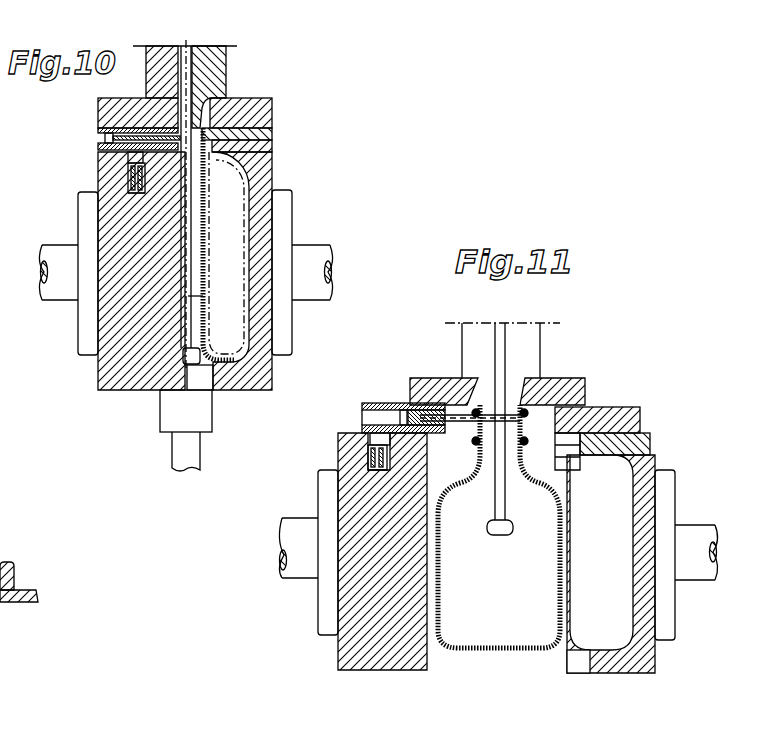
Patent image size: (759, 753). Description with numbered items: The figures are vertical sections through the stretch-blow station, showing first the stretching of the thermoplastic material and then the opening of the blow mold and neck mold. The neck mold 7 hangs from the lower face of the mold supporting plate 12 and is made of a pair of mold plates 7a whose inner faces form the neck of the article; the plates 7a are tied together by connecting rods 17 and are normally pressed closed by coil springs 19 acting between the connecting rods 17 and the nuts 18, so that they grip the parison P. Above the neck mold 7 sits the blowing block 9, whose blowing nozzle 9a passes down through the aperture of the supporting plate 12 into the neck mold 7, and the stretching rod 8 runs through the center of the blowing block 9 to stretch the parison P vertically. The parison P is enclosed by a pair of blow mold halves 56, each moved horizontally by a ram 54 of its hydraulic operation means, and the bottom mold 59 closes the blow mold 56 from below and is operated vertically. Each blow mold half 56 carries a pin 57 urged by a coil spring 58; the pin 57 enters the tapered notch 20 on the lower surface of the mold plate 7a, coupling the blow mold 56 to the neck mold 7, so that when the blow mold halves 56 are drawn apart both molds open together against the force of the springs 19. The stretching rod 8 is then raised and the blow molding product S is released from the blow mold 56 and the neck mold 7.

In FIG. 10, the neck mold 7 is at (223, 167).
In FIG. 11, the neck mold 7 is at (605, 460).
In FIG. 10, the mold plate 7a is at (258, 144).
In FIG. 11, the mold plate 7a is at (640, 408).
In FIG. 10, the stretching rod 8 is at (190, 63).
In FIG. 11, the stretching rod 8 is at (502, 503).
In FIG. 10, the blowing block 9 is at (210, 81).
In FIG. 11, the blowing block 9 is at (542, 338).
In FIG. 10, the blowing nozzle 9a is at (222, 146).
In FIG. 11, the blowing nozzle 9a is at (530, 415).
In FIG. 10, the mold supporting plate 12 is at (253, 115).
In FIG. 11, the mold supporting plate 12 is at (573, 390).
In FIG. 10, the connecting rod 17 is at (147, 133).
In FIG. 11, the connecting rod 17 is at (437, 410).
In FIG. 10, the nut 18 is at (105, 137).
In FIG. 11, the nut 18 is at (402, 410).
In FIG. 10, the coil spring 19 is at (123, 128).
In FIG. 11, the coil spring 19 is at (410, 403).
In FIG. 10, the notch 20 is at (128, 162).
In FIG. 11, the notch 20 is at (380, 438).
In FIG. 10, the ram 54 is at (63, 287).
In FIG. 11, the ram 54 is at (302, 530).
In FIG. 10, the blow mold half 56 is at (133, 370).
In FIG. 11, the blow mold half 56 is at (385, 645).
In FIG. 10, the pin 57 is at (128, 174).
In FIG. 11, the pin 57 is at (378, 440).
In FIG. 10, the coil spring 58 is at (128, 192).
In FIG. 11, the coil spring 58 is at (375, 463).
In FIG. 10, the bottom mold 59 is at (202, 405).
In FIG. 10, the parison P is at (208, 234).
In FIG. 11, the blow molding product S is at (503, 647).